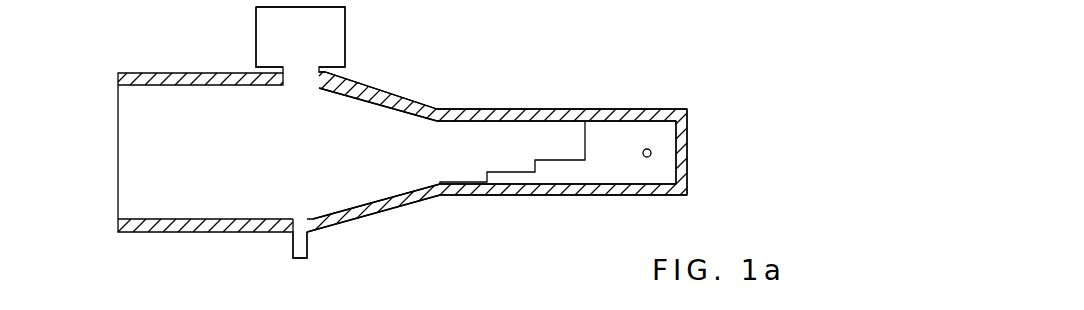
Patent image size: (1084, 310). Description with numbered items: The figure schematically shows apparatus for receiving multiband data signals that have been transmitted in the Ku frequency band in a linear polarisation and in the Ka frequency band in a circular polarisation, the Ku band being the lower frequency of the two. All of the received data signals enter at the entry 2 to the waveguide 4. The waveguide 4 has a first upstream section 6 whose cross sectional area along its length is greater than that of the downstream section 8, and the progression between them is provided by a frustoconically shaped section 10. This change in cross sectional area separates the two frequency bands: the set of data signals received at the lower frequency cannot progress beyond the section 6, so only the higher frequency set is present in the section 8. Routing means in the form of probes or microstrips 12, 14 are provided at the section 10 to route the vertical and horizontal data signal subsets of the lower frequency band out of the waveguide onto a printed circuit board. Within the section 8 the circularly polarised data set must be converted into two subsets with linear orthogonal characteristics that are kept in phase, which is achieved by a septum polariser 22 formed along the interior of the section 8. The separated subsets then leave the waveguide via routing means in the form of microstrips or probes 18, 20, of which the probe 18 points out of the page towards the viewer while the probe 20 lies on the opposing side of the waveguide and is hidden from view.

The entry 2 is at (118, 147).
The waveguide 4 is at (437, 90).
The first upstream section 6 is at (212, 198).
The downstream section 8 is at (527, 128).
The frustoconically shaped section 10 is at (398, 180).
The probe 12 is at (298, 258).
The probe 14 is at (336, 25).
The probe 18 is at (651, 150).
The probe 20 is at (699, 165).
The septum polariser 22 is at (582, 172).